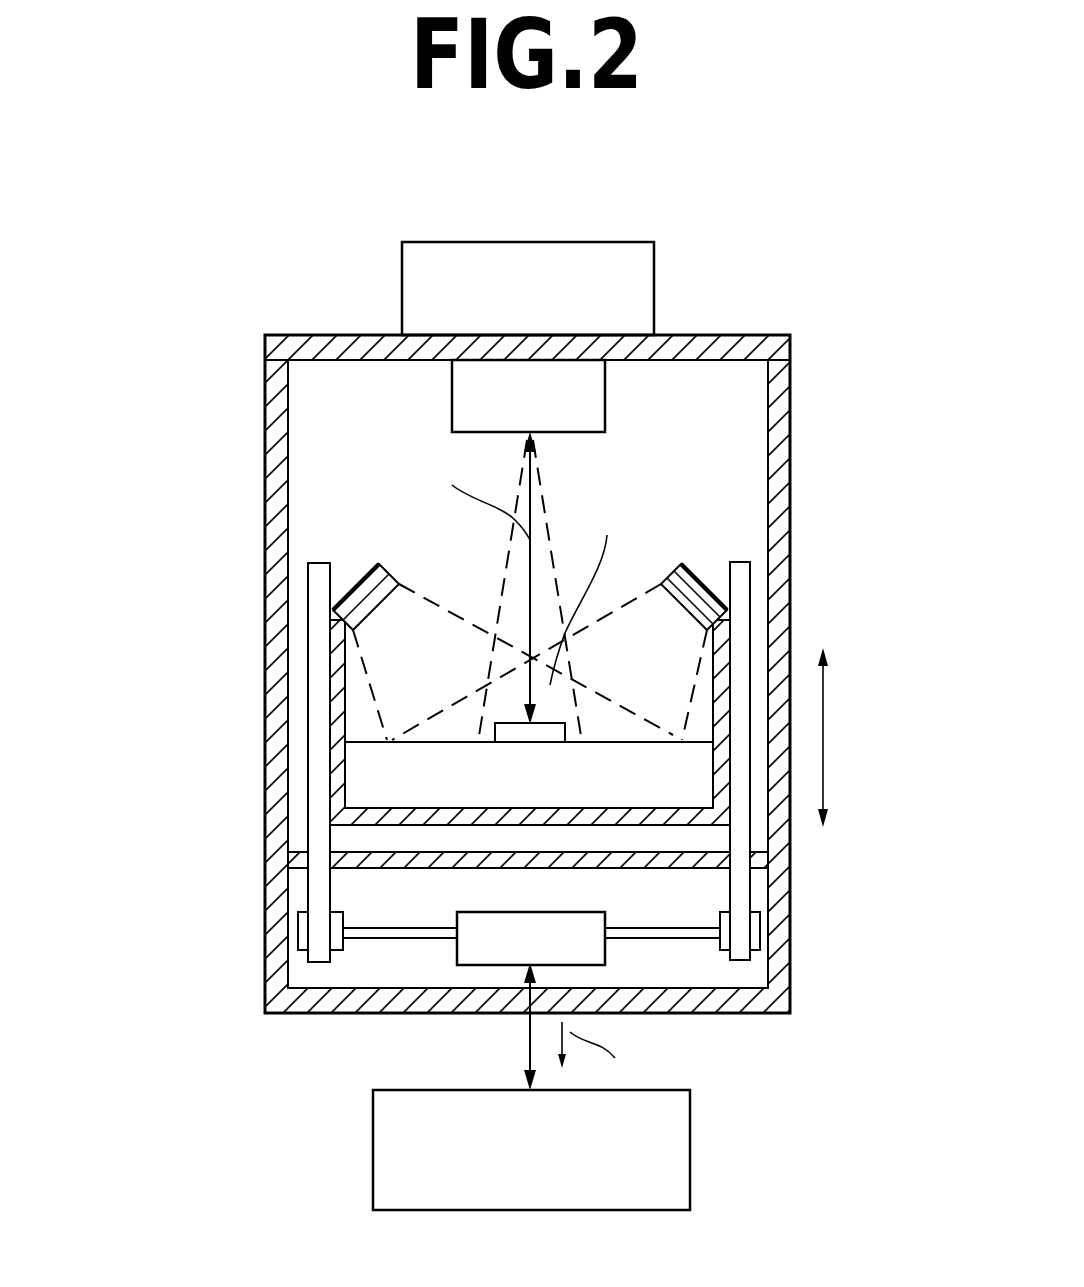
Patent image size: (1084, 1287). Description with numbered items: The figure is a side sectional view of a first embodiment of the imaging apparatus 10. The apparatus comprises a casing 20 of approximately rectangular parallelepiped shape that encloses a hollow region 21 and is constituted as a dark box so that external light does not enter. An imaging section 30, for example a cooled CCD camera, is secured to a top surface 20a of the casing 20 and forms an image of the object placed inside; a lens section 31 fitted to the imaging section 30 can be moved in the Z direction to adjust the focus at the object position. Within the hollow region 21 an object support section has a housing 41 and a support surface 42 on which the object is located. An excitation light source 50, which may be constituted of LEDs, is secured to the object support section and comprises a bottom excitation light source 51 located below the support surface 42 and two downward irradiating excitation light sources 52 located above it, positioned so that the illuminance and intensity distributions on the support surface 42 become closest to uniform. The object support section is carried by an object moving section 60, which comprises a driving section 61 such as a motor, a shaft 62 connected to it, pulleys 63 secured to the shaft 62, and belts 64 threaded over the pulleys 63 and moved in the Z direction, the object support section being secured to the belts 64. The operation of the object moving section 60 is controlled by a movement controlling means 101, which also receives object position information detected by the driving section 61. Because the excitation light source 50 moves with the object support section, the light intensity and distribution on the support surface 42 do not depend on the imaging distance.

The imaging apparatus 10 is at (826, 172).
The casing 20 is at (778, 535).
The top surface 20a is at (757, 346).
The hollow region 21 is at (723, 438).
The imaging section 30 is at (623, 253).
The lens section 31 is at (465, 393).
The housing 41 is at (720, 798).
The support surface 42 is at (430, 742).
The excitation light source 50 is at (137, 580).
The bottom excitation light source 51 is at (363, 770).
The downward irradiating excitation light source 52 is at (378, 565).
The object moving section 60 is at (293, 828).
The driving section 61 is at (477, 948).
The shaft 62 is at (677, 933).
The pulley 63 is at (753, 935).
The belt 64 is at (738, 842).
The movement controlling means 101 is at (690, 1165).